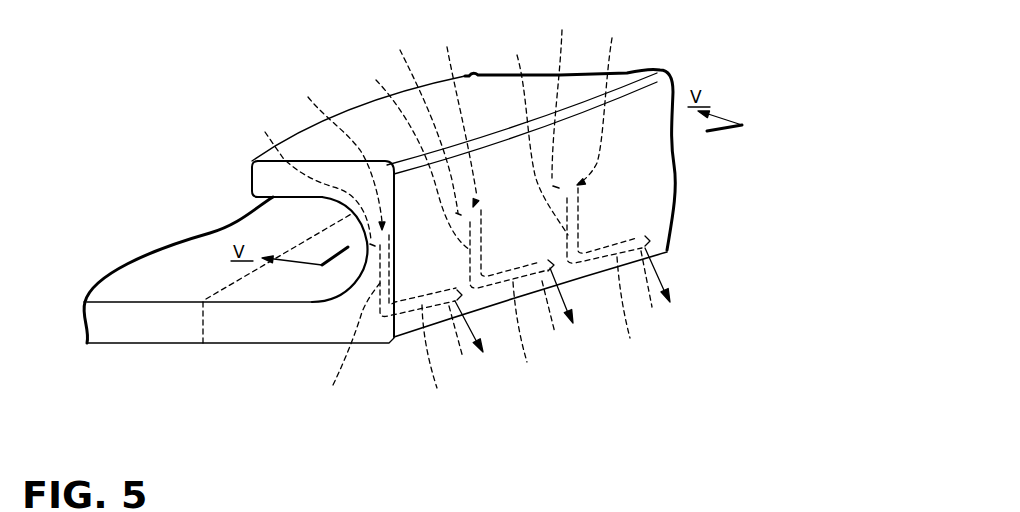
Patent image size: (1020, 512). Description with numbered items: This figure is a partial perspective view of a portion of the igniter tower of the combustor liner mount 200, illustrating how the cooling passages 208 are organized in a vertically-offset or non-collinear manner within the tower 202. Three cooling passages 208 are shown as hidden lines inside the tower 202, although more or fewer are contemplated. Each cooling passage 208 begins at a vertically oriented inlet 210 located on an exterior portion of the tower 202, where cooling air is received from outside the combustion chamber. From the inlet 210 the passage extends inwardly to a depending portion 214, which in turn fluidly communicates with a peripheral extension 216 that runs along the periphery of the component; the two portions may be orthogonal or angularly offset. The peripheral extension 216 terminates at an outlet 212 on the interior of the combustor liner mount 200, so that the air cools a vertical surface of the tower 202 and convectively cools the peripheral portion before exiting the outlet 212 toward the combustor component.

The combustor liner mount 200 is at (176, 178).
The tower 202 is at (345, 278).
The cooling passage 208 is at (463, 122).
The inlet 210 is at (414, 125).
The outlet 212 is at (536, 289).
The depending portion 214 is at (439, 216).
The peripheral extension 216 is at (540, 335).